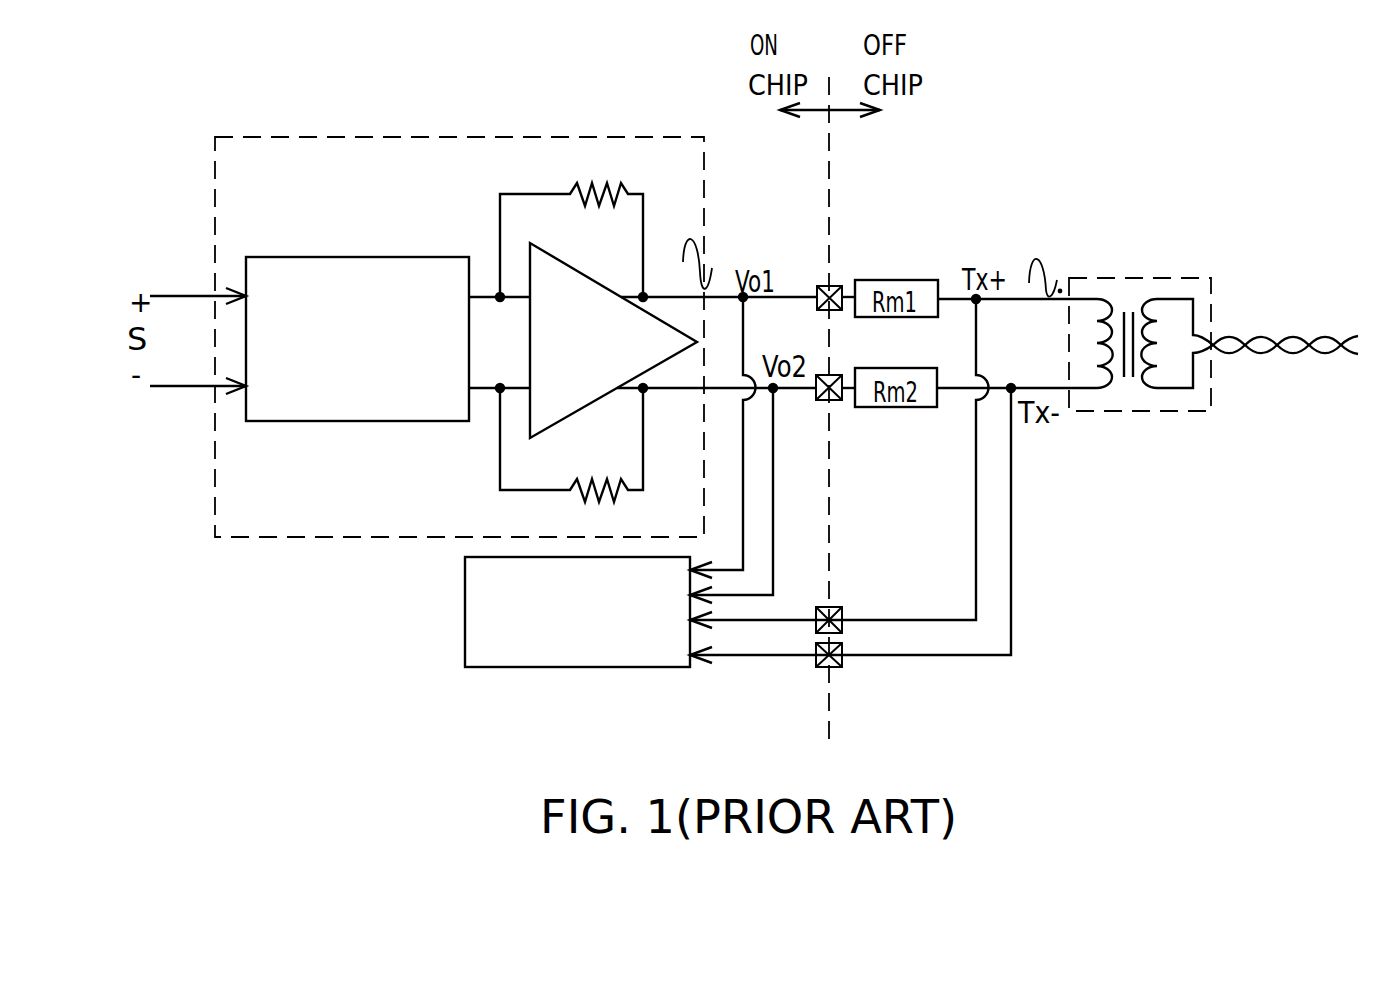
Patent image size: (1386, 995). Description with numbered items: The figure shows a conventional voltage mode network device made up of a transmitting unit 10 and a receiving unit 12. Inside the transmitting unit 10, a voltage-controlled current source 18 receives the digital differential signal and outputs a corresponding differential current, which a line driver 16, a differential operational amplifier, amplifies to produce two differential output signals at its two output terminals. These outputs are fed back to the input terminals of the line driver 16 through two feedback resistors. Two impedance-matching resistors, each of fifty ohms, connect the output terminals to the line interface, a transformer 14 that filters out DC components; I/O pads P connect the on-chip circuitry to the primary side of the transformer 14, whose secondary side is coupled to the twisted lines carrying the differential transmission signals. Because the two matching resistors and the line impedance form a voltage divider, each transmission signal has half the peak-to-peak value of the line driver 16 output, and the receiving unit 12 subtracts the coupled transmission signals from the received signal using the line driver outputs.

The transmitting unit 10 is at (571, 137).
The receiving unit 12 is at (583, 668).
The transformer 14 is at (1152, 278).
The line driver 16 is at (613, 340).
The voltage-controlled current source 18 is at (357, 339).
The I/O pads P is at (837, 289).